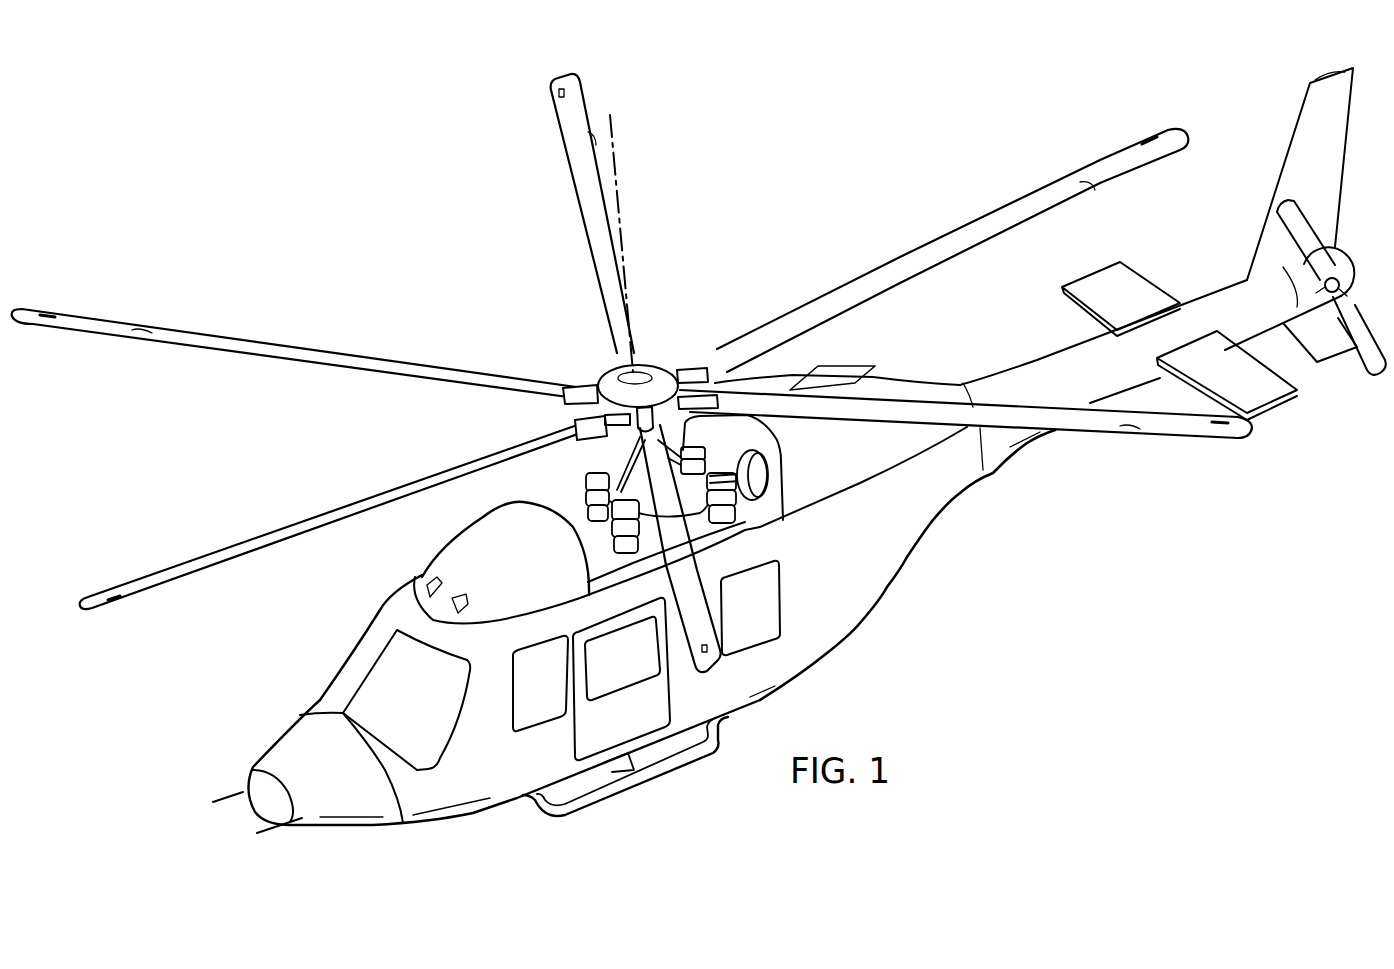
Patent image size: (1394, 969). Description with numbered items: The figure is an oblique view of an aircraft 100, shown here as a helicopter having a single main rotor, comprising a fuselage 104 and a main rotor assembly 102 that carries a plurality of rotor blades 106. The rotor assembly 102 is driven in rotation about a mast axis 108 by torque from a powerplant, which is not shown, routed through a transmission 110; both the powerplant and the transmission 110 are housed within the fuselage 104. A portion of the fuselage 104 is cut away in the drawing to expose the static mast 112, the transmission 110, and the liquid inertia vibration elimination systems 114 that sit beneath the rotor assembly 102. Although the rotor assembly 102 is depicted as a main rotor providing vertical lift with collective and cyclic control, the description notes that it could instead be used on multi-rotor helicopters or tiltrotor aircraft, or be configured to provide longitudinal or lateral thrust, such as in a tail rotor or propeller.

The aircraft 100 is at (367, 214).
The main rotor assembly 102 is at (553, 411).
The fuselage 104 is at (872, 587).
The rotor blades 106 is at (590, 247).
The mast axis 108 is at (623, 217).
The transmission 110 is at (700, 550).
The static mast 112 is at (617, 450).
The liquid inertia vibration elimination (LIVE) systems 114 is at (588, 543).